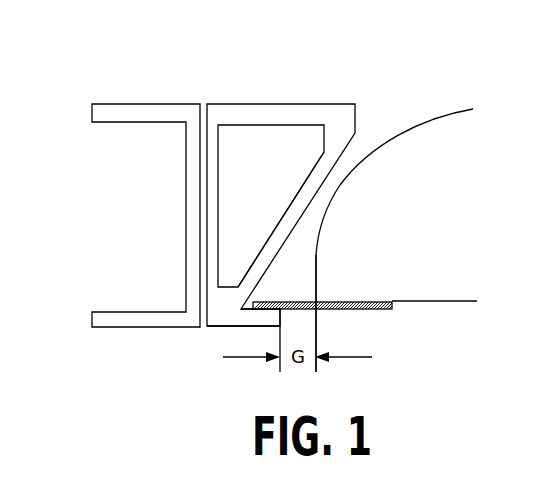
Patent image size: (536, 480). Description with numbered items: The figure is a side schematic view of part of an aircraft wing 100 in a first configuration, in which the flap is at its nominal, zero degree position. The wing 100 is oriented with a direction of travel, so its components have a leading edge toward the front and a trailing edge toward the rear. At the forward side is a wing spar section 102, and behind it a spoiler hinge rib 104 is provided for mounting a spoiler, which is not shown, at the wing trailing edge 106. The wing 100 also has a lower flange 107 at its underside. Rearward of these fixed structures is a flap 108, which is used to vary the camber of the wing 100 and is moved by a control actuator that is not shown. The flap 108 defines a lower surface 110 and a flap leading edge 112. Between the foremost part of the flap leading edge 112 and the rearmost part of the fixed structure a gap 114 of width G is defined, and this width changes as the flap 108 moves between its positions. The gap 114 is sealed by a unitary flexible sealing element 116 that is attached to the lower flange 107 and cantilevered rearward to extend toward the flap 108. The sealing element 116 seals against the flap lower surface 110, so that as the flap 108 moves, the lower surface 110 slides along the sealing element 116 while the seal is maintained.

The wing 100 is at (198, 62).
The wing spar section 102 is at (123, 122).
The spoiler hinge rib 104 is at (315, 104).
The wing trailing edge 106 is at (356, 112).
The lower flange 107 is at (258, 322).
The flap 108 is at (436, 155).
The lower surface 110 is at (422, 300).
The flap leading edge 112 is at (323, 218).
The gap 114 is at (300, 297).
The sealing element 116 is at (373, 309).